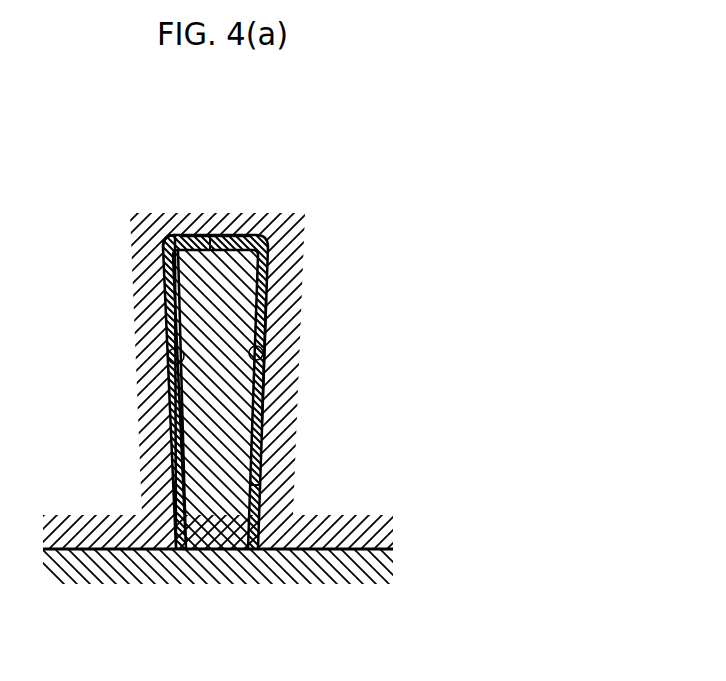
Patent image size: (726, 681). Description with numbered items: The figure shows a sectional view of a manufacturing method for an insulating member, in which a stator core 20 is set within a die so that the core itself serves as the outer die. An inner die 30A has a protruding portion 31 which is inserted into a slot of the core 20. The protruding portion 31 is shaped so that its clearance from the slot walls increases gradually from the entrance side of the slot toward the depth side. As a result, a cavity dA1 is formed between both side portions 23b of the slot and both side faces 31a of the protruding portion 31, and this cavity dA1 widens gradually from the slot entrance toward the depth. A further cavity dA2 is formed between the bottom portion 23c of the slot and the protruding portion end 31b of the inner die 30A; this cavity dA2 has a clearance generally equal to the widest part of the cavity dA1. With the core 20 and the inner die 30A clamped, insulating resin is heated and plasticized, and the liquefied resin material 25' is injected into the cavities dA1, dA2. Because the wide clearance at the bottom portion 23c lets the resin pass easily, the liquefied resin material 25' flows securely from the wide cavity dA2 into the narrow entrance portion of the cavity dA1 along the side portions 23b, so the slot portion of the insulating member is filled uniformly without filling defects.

The stator core 20 is at (327, 228).
The side portions of the slot 23b is at (176, 358).
The bottom portion of the slot 23c is at (171, 212).
The liquefied resin material 25' is at (278, 399).
The inner die 30A is at (101, 581).
The protruding portion 31 is at (290, 222).
The side faces of the protruding portion 31a is at (288, 403).
The protruding portion end 31b is at (252, 210).
The cavity dA1 is at (265, 487).
The cavity dA2 is at (217, 210).